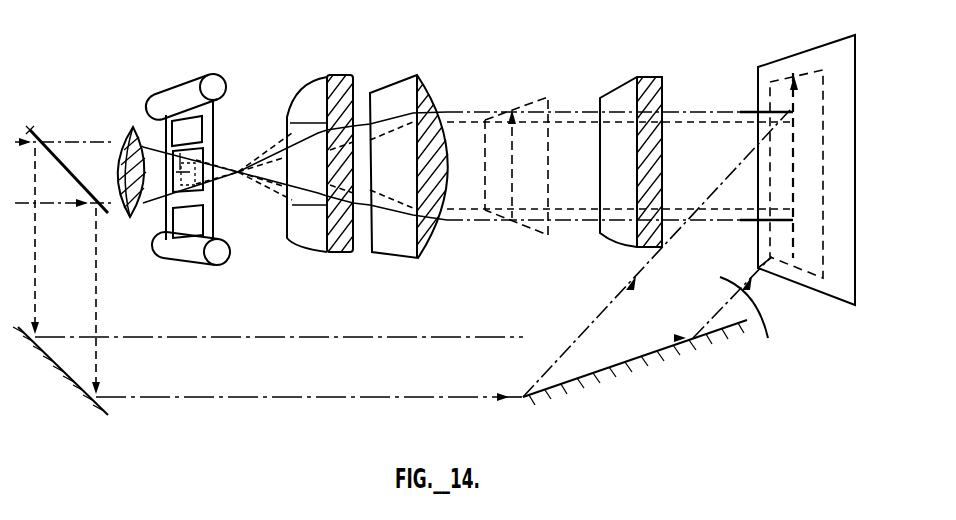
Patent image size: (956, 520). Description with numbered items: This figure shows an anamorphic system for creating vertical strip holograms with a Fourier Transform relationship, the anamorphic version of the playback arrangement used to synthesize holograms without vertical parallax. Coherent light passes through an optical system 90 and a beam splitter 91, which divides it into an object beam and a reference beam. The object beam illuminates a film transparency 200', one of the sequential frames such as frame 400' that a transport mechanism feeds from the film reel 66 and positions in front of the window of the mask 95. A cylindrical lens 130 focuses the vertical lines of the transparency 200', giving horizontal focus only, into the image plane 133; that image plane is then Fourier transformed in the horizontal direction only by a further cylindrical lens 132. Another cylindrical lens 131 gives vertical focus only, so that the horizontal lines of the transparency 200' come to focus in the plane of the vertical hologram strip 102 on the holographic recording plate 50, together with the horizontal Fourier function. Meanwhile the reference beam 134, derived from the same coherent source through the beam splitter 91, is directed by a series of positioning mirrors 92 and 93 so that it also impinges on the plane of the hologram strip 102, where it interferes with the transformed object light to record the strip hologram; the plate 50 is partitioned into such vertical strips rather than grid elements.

The beam splitter 91 is at (31, 131).
The optical system 90 is at (132, 132).
The film reel 66 is at (212, 84).
The transparency frame 400' is at (171, 243).
The mask 95 is at (215, 221).
The film transparency 200' is at (221, 150).
The cylindrical lens 130 is at (342, 77).
The cylindrical lens 131 is at (407, 74).
The image plane 133 is at (537, 93).
The cylindrical lens 132 is at (652, 78).
The holographic recording plate 50 is at (838, 272).
The vertical hologram strip 102 is at (795, 58).
The reference beam 134 is at (759, 314).
The positioning mirror 93 is at (605, 372).
The positioning mirror 92 is at (63, 375).